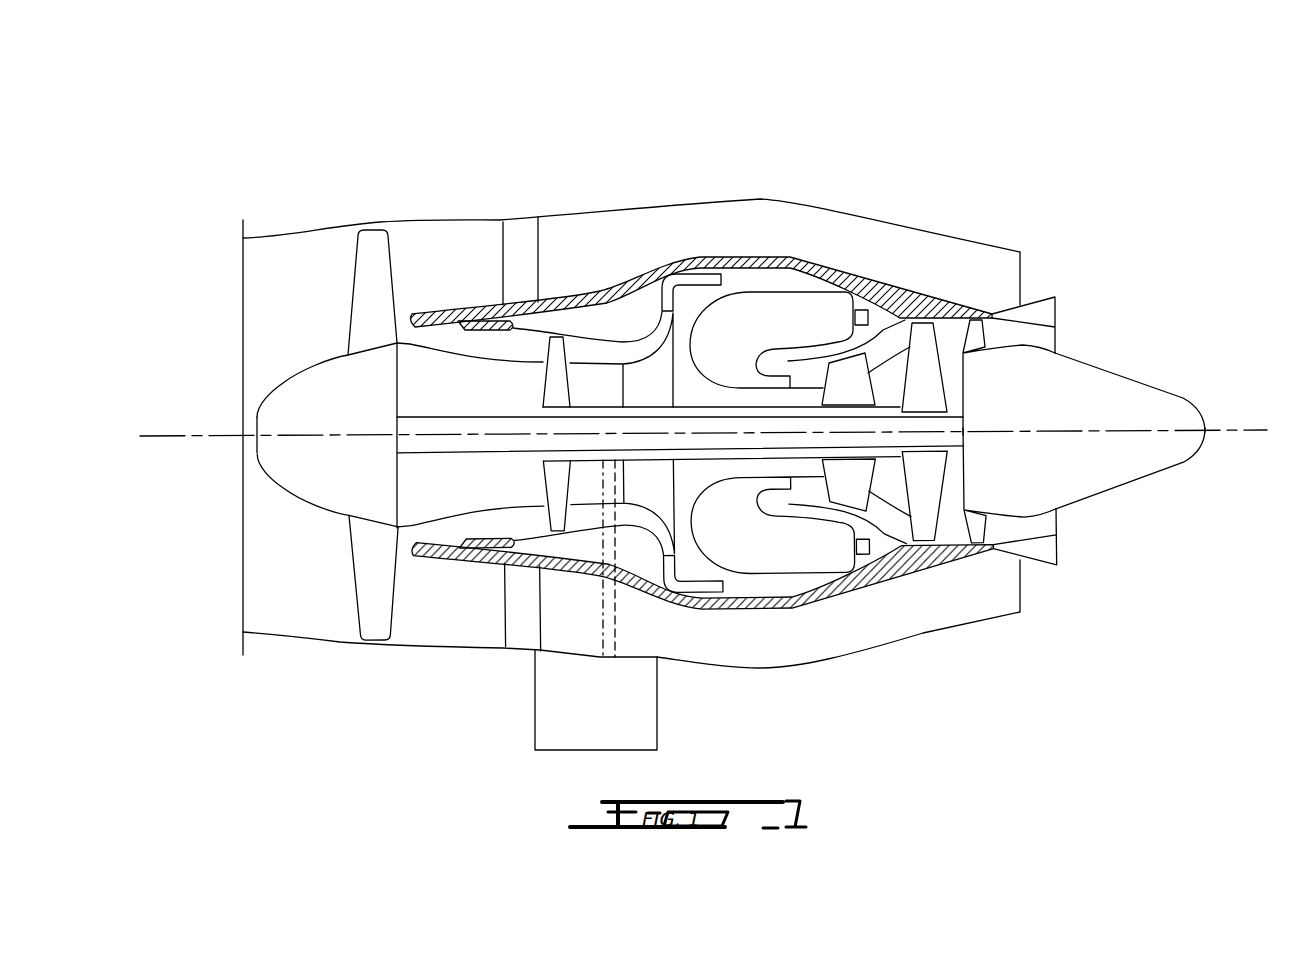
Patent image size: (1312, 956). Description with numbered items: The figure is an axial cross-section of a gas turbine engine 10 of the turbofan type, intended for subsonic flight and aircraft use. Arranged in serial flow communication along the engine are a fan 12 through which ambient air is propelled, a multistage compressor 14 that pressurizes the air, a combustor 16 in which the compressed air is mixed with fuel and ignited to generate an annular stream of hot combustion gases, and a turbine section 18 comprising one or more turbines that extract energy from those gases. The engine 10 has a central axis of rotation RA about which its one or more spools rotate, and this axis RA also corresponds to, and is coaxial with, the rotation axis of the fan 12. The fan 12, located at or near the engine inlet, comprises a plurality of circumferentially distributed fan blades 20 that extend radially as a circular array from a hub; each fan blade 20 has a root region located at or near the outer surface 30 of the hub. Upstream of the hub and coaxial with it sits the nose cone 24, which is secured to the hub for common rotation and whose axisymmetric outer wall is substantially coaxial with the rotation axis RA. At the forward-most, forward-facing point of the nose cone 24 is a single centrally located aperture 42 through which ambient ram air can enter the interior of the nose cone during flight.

The gas turbine engine 10 is at (914, 142).
The fan 12 is at (263, 360).
The multistage compressor 14 is at (608, 357).
The combustor 16 is at (772, 310).
The turbine section 18 is at (888, 490).
The fan blades 20 is at (372, 253).
The nose cone 24 is at (275, 483).
The outer surface of hub 30 is at (370, 347).
The aperture 42 is at (257, 425).
The central axis of rotation RA is at (1232, 432).